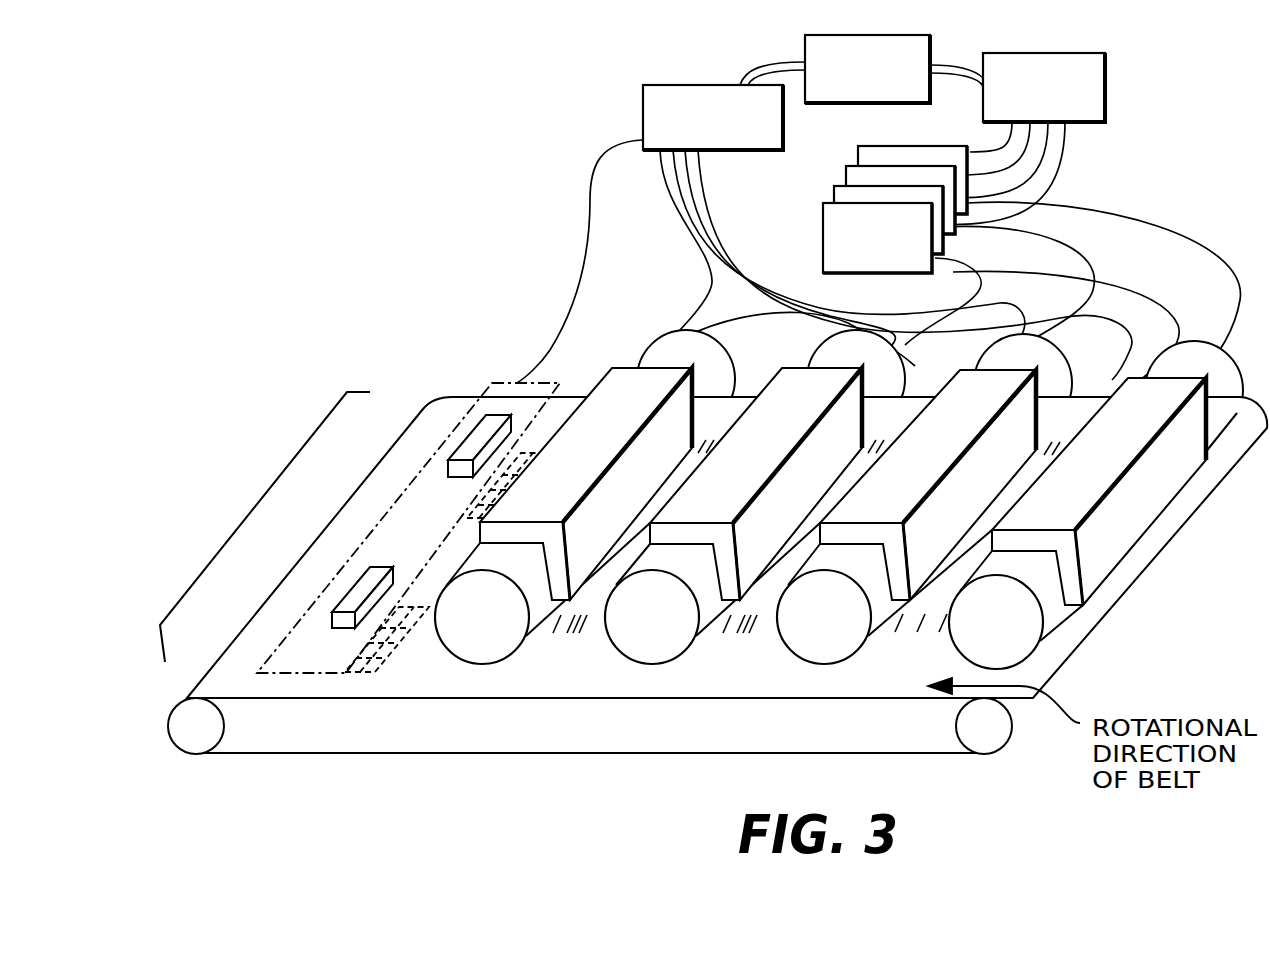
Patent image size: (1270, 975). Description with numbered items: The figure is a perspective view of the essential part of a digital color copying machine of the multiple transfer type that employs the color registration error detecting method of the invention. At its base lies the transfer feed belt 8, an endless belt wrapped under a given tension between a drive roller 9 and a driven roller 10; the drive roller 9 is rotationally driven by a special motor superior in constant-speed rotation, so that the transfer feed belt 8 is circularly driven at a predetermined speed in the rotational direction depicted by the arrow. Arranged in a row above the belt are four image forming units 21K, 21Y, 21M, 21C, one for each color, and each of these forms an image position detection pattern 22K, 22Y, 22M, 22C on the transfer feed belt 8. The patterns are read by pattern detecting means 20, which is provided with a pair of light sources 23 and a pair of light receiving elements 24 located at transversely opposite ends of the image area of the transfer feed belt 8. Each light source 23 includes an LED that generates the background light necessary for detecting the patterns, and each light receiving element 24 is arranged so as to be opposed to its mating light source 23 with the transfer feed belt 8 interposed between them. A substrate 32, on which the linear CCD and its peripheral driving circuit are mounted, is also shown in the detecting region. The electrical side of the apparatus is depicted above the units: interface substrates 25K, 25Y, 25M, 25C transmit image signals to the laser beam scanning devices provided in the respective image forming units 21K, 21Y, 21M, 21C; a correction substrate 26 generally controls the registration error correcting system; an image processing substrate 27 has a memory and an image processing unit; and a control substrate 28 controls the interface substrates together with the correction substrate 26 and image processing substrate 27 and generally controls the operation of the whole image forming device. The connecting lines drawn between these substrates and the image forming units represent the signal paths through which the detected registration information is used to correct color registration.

The transfer feed belt 8 is at (459, 397).
The drive roller 9 is at (985, 728).
The driven roller 10 is at (193, 737).
The pattern detecting means 20 is at (250, 505).
The image forming unit 21C is at (610, 396).
The image forming unit 21M is at (750, 400).
The image forming unit 21Y is at (933, 412).
The image forming unit 21K is at (1123, 404).
The image position detection pattern 22C is at (420, 665).
The image position detection pattern 22M is at (565, 657).
The image position detection pattern 22Y is at (730, 661).
The image position detection pattern 22K is at (905, 656).
The light source 23 is at (472, 496).
The light receiving element 24 is at (470, 438).
The interface substrate 25C is at (877, 238).
The interface substrate 25M is at (850, 198).
The interface substrate 25Y is at (883, 179).
The interface substrate 25K is at (955, 152).
The correction substrate 26 is at (672, 85).
The image processing substrate 27 is at (1107, 75).
The control substrate 28 is at (838, 35).
The substrate 32 is at (497, 383).